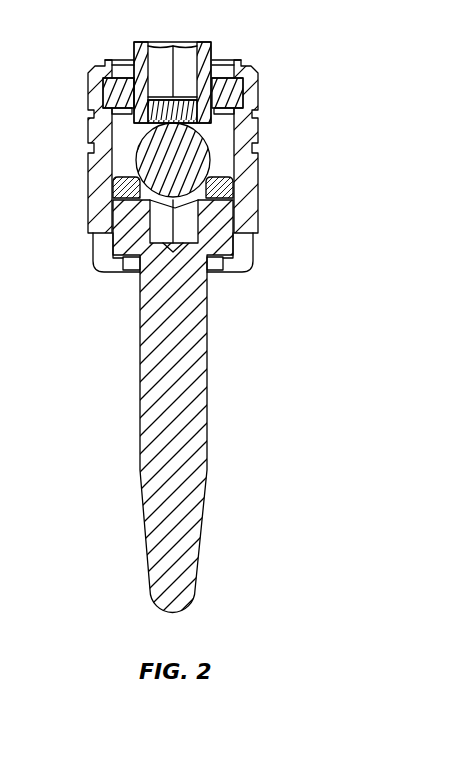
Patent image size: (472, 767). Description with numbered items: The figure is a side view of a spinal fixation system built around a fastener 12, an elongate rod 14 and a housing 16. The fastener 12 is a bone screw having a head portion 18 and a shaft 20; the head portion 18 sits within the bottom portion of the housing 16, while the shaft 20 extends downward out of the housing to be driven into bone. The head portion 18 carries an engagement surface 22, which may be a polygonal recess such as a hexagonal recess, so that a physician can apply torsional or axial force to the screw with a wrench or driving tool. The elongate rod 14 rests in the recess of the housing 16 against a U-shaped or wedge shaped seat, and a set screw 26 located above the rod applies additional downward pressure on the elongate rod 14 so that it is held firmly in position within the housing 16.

The fastener 12 is at (207, 410).
The elongate rod 14 is at (190, 158).
The housing 16 is at (243, 192).
The head portion 18 is at (120, 252).
The shaft 20 is at (180, 577).
The engagement surface 22 is at (197, 203).
The set screw 26 is at (197, 42).